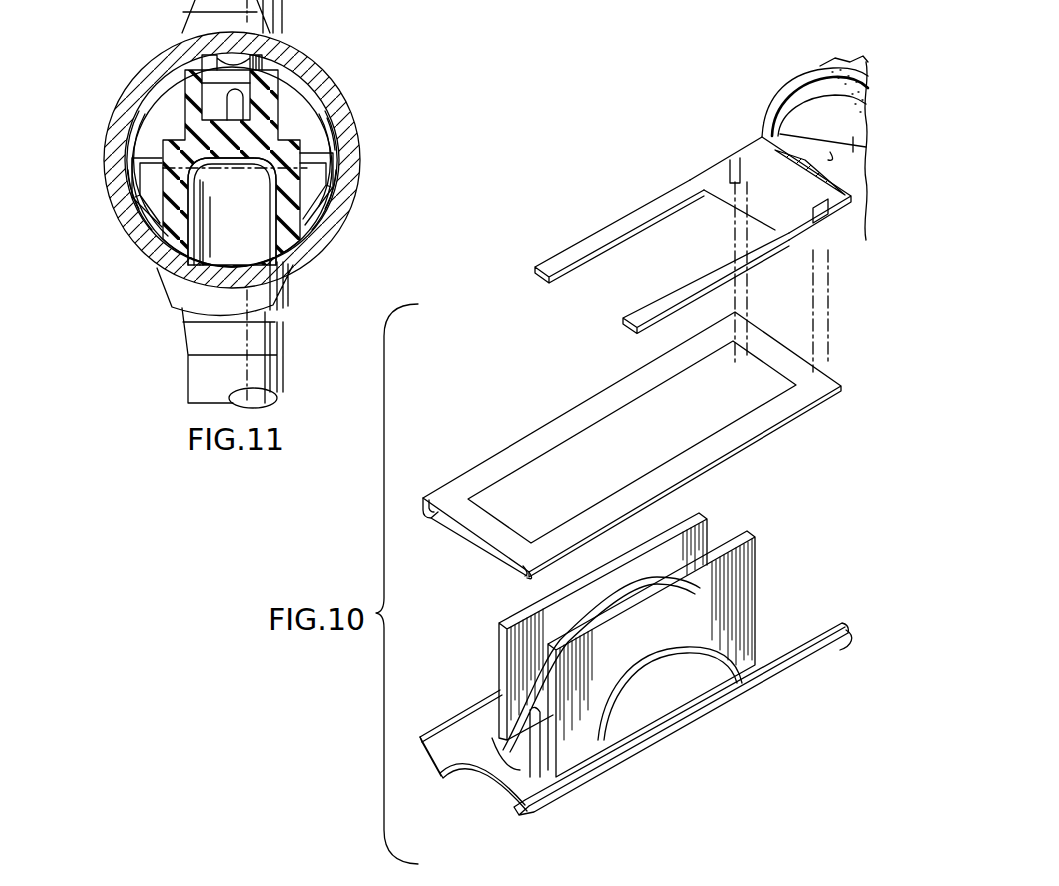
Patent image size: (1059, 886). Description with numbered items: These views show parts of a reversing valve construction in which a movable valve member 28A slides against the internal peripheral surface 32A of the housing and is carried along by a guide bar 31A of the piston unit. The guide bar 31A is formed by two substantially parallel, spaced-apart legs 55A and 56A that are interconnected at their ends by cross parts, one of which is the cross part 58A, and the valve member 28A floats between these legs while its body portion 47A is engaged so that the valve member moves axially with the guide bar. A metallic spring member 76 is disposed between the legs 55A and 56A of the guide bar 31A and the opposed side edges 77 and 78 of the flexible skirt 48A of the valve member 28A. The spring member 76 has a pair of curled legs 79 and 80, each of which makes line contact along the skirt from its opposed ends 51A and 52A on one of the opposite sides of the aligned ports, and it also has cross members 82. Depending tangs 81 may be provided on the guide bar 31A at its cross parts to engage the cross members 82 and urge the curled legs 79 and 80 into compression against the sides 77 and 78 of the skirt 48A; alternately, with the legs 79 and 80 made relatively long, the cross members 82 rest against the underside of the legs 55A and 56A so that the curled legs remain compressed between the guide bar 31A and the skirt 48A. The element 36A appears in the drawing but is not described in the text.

In FIG. 11, the valve member 28A is at (207, 112).
In FIG. 10, the valve member 28A is at (567, 633).
In FIG. 11, the guide bar 31A is at (323, 147).
In FIG. 10, the guide bar 31A is at (572, 250).
In FIG. 11, the internal peripheral surface 32A is at (313, 100).
In FIG. 11, the terminal pin socket 36A is at (187, 277).
In FIG. 11, the body portion 47A is at (260, 97).
In FIG. 11, the flexible skirt 48A is at (140, 225).
In FIG. 10, the flexible skirt 48A is at (438, 743).
In FIG. 10, the end of flexible skirt 51A is at (433, 760).
In FIG. 10, the end of flexible skirt 52A is at (842, 643).
In FIG. 11, the leg of guide bar 55A is at (140, 160).
In FIG. 10, the leg of guide bar 55A is at (637, 210).
In FIG. 11, the leg of guide bar 56A is at (327, 163).
In FIG. 10, the leg of guide bar 56A is at (650, 313).
In FIG. 10, the cross part 58A is at (800, 153).
In FIG. 11, the spring member 76 is at (150, 157).
In FIG. 10, the spring member 76 is at (518, 450).
In FIG. 11, the side edge of flexible skirt 77 is at (120, 213).
In FIG. 10, the side edge of flexible skirt 77 is at (465, 717).
In FIG. 11, the side edge of flexible skirt 78 is at (332, 200).
In FIG. 10, the side edge of flexible skirt 78 is at (800, 643).
In FIG. 11, the curled leg 79 is at (130, 182).
In FIG. 10, the curled leg 79 is at (427, 513).
In FIG. 11, the curled leg 80 is at (337, 187).
In FIG. 10, the curled leg 80 is at (527, 573).
In FIG. 10, the depending tang 81 is at (737, 173).
In FIG. 11, the cross member 82 is at (303, 137).
In FIG. 10, the cross member 82 is at (762, 343).